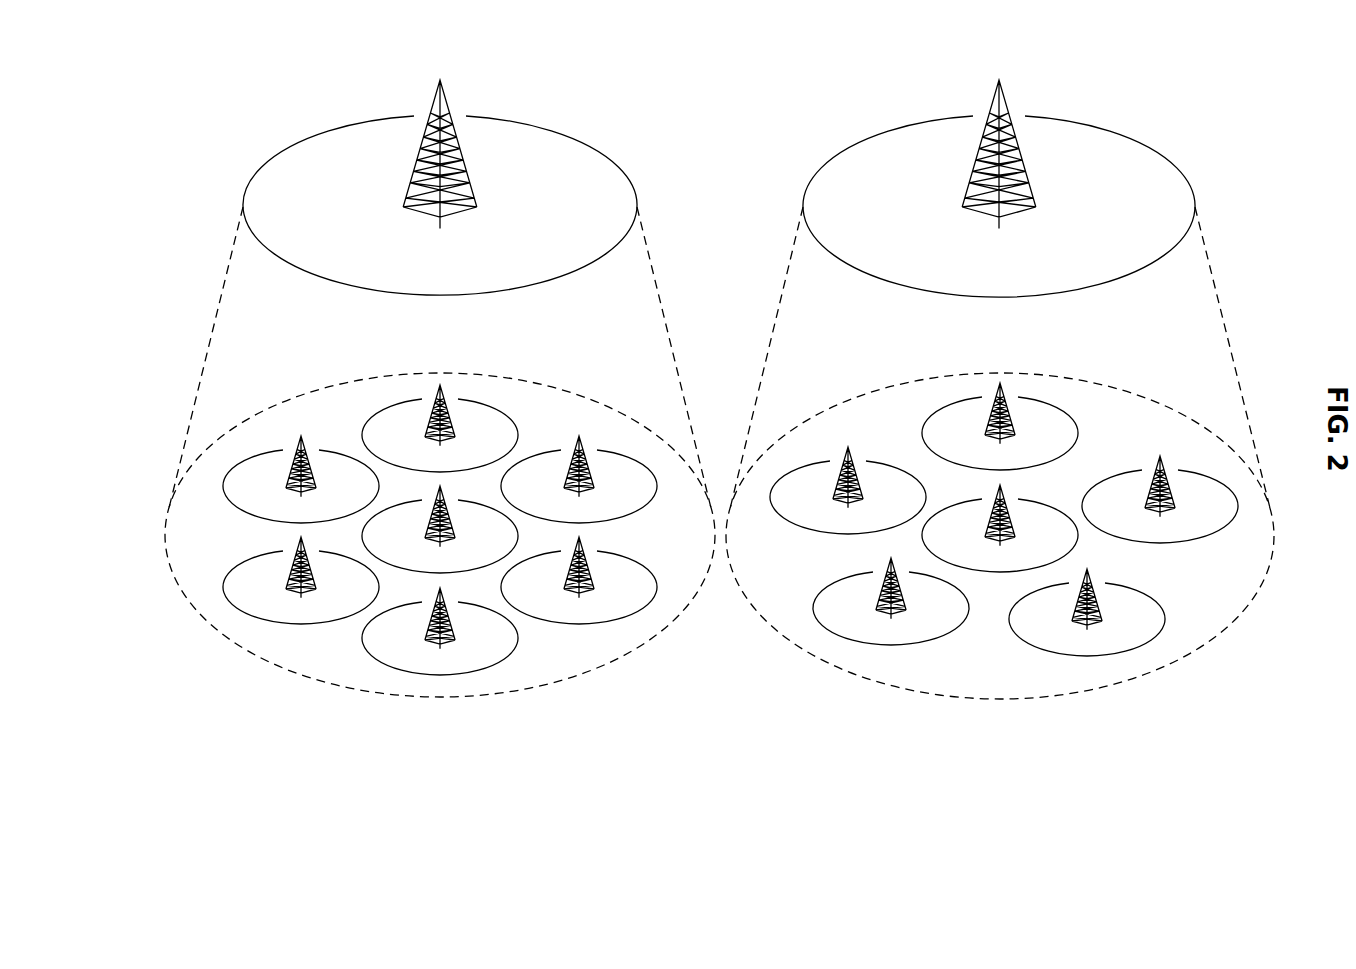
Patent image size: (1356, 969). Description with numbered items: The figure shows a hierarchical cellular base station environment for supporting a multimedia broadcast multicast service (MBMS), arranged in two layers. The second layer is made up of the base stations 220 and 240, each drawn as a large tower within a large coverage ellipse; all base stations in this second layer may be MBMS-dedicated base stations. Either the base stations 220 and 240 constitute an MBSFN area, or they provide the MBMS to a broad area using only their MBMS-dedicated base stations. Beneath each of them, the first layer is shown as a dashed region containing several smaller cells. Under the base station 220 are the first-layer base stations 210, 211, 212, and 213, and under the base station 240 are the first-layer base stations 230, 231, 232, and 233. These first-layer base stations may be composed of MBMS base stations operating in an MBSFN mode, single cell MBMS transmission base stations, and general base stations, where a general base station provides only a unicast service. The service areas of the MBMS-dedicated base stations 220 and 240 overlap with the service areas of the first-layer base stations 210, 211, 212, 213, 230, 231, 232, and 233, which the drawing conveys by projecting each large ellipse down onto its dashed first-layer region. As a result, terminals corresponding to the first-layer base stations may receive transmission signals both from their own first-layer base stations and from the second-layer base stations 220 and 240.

The base station 210 is at (441, 374).
The base station 211 is at (302, 607).
The base station 212 is at (443, 654).
The base station 213 is at (579, 606).
The base station 220 is at (558, 132).
The base station 230 is at (998, 375).
The base station 231 is at (888, 632).
The base station 232 is at (1083, 640).
The base station 233 is at (1163, 530).
The base station 240 is at (1117, 132).